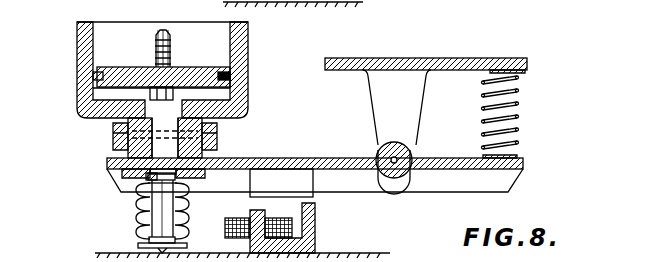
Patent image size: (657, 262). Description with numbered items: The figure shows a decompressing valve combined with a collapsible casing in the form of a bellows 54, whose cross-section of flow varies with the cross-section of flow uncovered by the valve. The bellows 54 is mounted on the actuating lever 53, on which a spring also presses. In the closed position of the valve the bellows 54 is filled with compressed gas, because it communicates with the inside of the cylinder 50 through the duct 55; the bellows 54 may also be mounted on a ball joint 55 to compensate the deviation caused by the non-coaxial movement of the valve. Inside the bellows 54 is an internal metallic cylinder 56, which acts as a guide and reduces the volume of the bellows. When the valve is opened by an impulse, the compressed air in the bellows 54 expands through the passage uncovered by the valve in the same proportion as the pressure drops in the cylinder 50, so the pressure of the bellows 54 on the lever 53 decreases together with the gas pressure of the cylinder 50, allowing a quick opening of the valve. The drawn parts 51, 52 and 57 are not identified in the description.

The cylinder 50 is at (82, 105).
The stem fitting 51 is at (168, 124).
The collar 52 is at (114, 150).
The actuating lever 53 is at (447, 170).
The bellows 54 is at (138, 226).
The duct 55 is at (145, 177).
The internal metallic cylinder 56 is at (152, 202).
The foot plate 57 is at (140, 247).